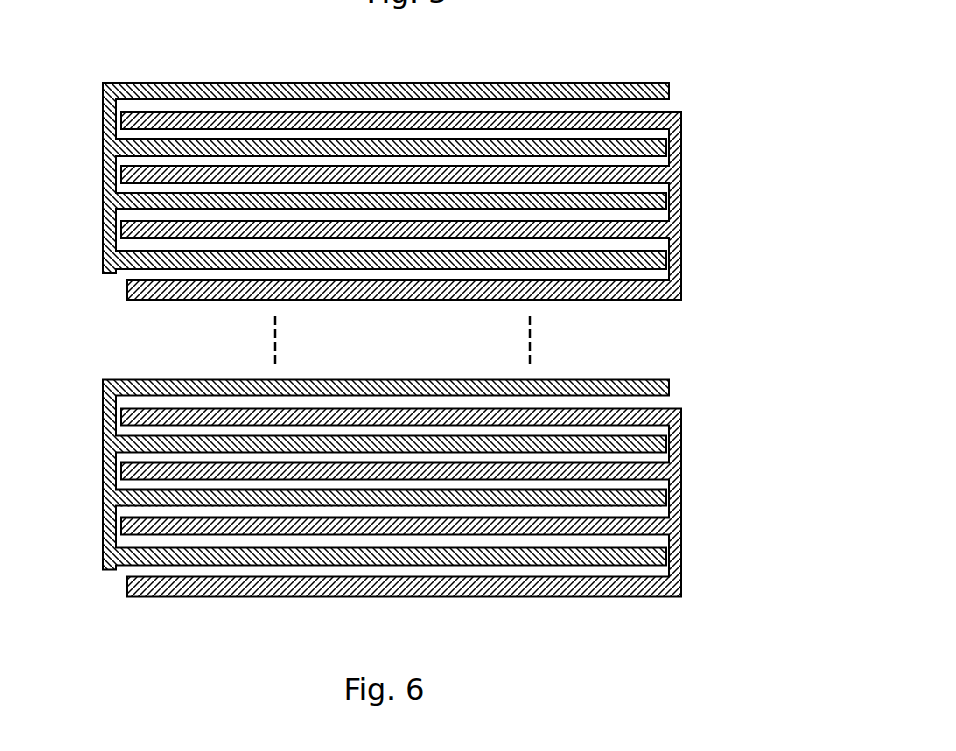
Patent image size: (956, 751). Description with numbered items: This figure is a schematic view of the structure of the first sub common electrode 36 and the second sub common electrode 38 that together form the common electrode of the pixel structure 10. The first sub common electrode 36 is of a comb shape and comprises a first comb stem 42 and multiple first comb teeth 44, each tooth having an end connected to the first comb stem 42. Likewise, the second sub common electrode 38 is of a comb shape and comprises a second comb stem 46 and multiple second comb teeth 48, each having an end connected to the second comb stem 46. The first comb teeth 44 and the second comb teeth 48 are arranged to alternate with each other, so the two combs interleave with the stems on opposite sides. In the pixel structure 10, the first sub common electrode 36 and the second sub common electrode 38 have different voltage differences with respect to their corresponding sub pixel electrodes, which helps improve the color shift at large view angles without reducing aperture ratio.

The pixel structure 10 is at (742, 125).
The first sub common electrode 36 is at (65, 55).
The second sub common electrode 38 is at (753, 372).
The first comb stem 42 is at (107, 122).
The first comb teeth 44 is at (145, 85).
The second comb stem 46 is at (677, 470).
The second comb teeth 48 is at (632, 414).